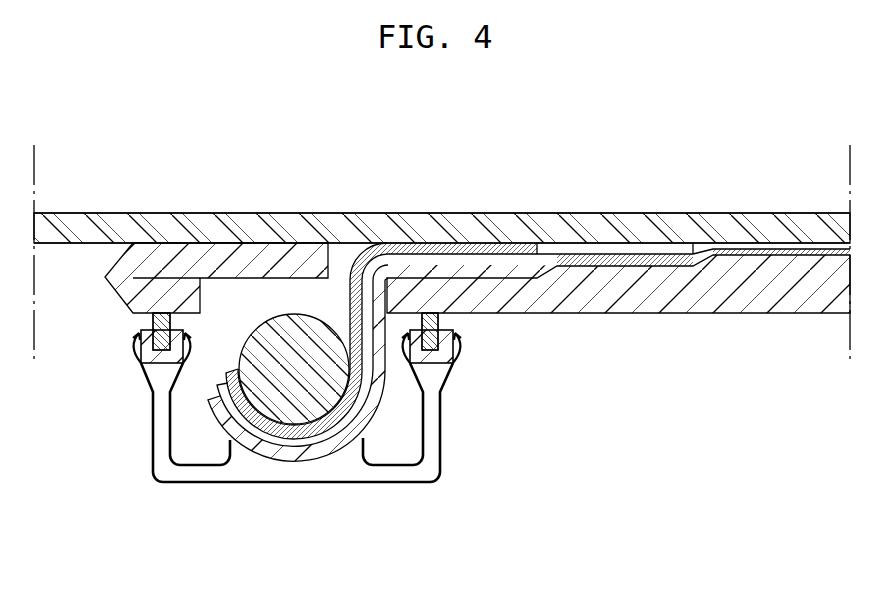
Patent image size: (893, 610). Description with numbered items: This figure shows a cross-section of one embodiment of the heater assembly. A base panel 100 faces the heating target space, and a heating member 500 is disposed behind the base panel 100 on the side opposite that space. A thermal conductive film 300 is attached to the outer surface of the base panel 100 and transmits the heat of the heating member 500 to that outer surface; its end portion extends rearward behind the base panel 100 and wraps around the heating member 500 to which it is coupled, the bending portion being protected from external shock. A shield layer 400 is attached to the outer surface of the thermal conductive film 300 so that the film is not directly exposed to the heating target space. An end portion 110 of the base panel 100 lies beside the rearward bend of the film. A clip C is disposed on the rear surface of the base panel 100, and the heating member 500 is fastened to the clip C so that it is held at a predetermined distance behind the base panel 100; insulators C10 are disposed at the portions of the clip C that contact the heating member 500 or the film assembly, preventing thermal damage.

The base panel 100 is at (768, 300).
The end portion of the base panel 110 is at (242, 260).
The thermal conductive film 300 is at (497, 270).
The shield layer 400 is at (593, 225).
The heating member 500 is at (295, 405).
The clip C is at (438, 452).
The insulators C10 is at (141, 362).